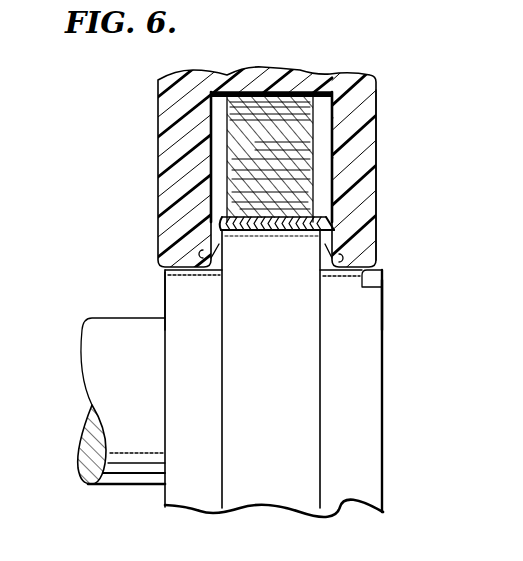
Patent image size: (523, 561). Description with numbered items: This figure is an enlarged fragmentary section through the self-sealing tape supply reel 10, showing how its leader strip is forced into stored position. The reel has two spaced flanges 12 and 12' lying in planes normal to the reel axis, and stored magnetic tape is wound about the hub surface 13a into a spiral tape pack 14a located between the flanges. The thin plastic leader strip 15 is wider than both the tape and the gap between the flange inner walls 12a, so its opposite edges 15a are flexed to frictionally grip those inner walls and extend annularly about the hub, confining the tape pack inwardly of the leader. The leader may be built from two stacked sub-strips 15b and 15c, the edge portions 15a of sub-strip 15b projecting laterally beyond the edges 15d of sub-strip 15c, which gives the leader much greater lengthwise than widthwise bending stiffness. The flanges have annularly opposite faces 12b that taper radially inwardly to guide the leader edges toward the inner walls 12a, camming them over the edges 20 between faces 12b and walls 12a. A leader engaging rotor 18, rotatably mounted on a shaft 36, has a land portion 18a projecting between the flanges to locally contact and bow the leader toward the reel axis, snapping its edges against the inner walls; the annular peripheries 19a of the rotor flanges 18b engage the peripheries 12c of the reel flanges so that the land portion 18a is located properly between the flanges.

The supply reel 10 is at (147, 87).
The flange 12 is at (234, 165).
The flange inner wall 12a is at (215, 150).
The flange 12' is at (395, 175).
The tapered face 12b is at (218, 233).
The reel flange periphery 12c is at (181, 272).
The hub surface 13a is at (251, 95).
The spiral tape pack 14a is at (297, 118).
The leader strip 15 is at (250, 243).
The leader opposite edges 15a is at (334, 236).
The sub-strip 15b is at (271, 231).
The sub-strip 15c is at (308, 190).
The sub-strip edges 15d is at (322, 218).
The leader engaging rotor 18 is at (392, 394).
The land portion 18a is at (300, 441).
The rotor flange 18b is at (165, 330).
The annular periphery 19a is at (170, 293).
The edge 20 is at (223, 240).
The shaft 36 is at (130, 443).